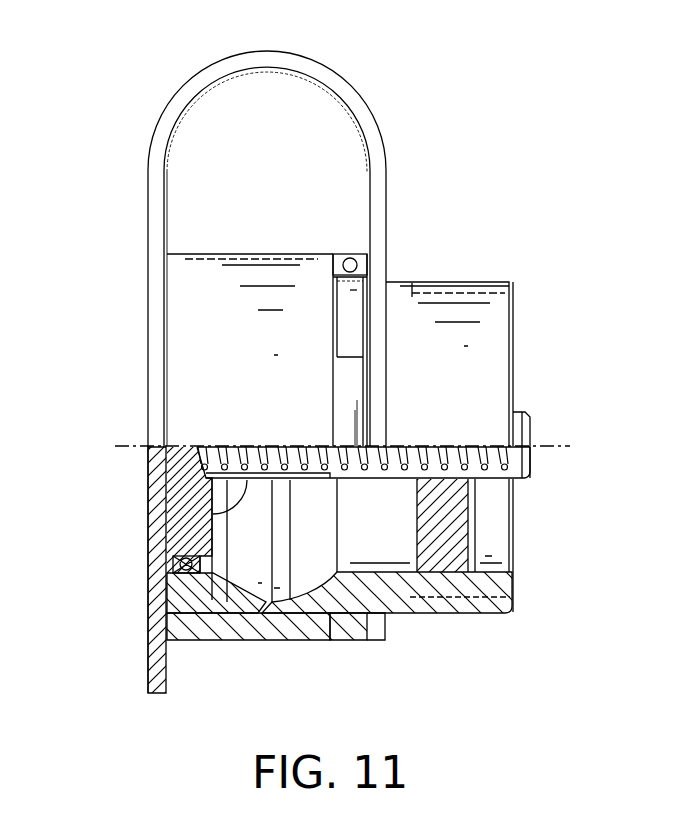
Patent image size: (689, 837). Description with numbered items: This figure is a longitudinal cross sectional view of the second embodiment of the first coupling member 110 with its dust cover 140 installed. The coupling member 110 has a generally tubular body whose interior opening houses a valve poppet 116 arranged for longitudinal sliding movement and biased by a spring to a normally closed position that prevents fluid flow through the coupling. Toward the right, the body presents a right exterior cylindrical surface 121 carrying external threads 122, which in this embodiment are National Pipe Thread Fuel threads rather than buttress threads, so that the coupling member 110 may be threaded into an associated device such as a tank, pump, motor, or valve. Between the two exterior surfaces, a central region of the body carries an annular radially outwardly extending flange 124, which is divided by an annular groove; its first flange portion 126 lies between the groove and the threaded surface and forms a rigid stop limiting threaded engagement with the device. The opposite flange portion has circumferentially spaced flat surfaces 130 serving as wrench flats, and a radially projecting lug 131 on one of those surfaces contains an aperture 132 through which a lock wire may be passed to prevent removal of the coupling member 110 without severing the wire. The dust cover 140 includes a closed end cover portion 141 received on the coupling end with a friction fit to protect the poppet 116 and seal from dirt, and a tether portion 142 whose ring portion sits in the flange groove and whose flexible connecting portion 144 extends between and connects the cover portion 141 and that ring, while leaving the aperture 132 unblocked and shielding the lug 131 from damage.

The coupling member 110 is at (477, 176).
The valve poppet 116 is at (212, 486).
The right exterior cylindrical surface 121 is at (512, 275).
The external threads 122 is at (462, 282).
The flange 124 is at (347, 623).
The first flange portion 126 is at (237, 617).
The flat surfaces 130 is at (348, 395).
The lug 131 is at (346, 259).
The aperture 132 is at (349, 258).
The dust cover 140 is at (150, 583).
The cover portion 141 is at (181, 633).
The tether portion 142 is at (148, 190).
The flexible connecting portion 144 is at (323, 70).